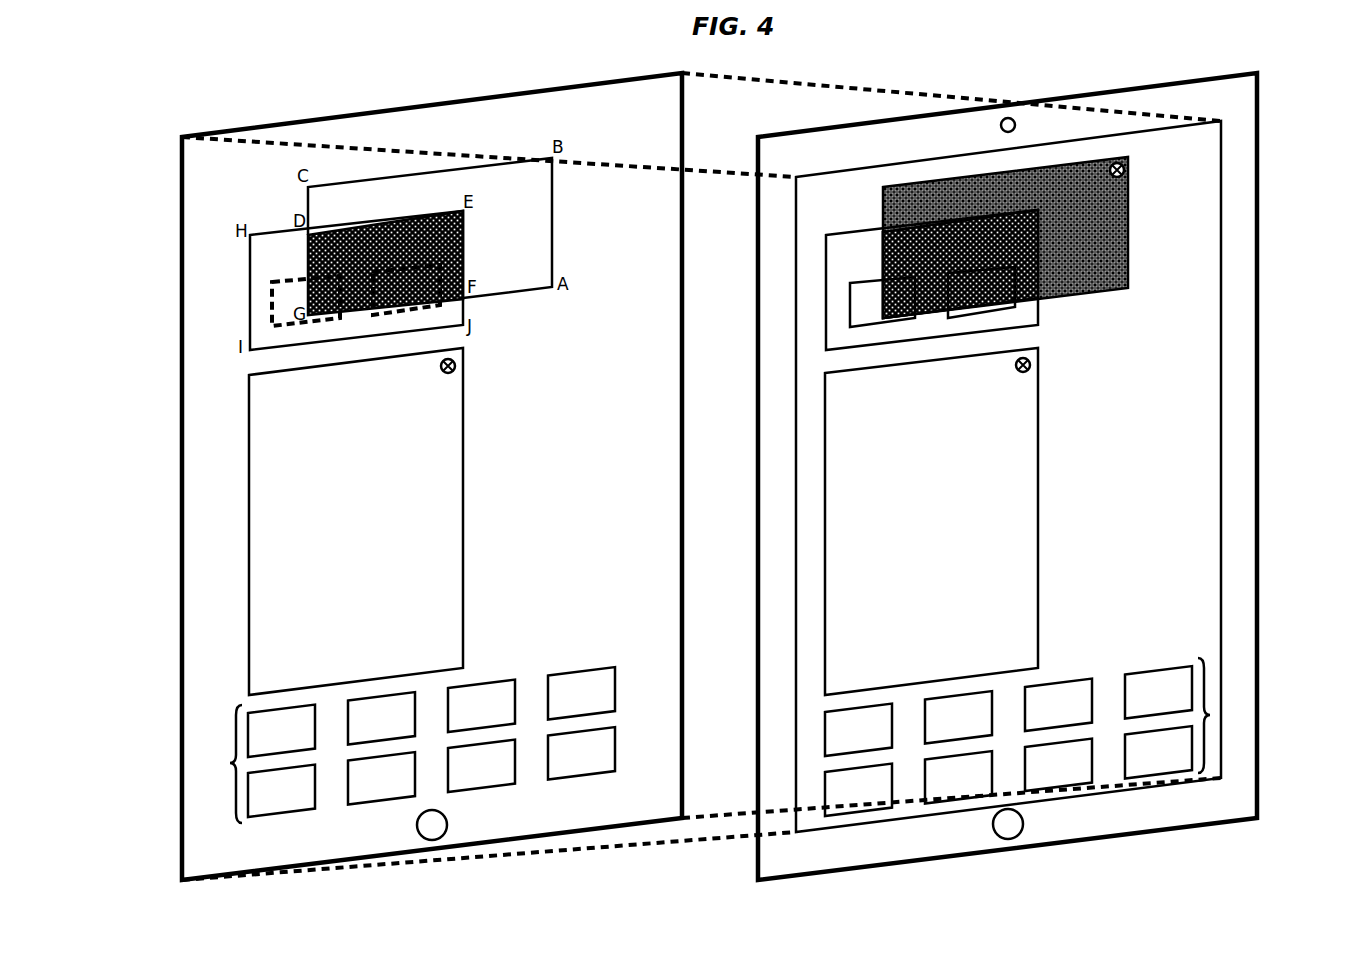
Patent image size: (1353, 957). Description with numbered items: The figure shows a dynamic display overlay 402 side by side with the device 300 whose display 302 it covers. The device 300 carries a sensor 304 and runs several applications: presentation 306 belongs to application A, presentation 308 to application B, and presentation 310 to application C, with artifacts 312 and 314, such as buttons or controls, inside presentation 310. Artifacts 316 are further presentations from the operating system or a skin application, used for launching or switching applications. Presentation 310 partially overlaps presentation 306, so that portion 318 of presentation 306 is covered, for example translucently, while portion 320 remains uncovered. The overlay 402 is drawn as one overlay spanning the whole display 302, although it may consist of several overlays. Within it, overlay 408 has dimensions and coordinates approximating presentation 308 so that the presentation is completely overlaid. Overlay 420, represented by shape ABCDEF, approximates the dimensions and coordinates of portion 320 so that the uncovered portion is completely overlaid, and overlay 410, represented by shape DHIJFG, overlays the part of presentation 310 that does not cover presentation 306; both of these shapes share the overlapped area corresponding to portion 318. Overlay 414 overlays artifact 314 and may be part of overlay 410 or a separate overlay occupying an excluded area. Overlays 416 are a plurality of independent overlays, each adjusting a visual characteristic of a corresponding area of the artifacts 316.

The device 300 is at (1260, 77).
The display 302 is at (1221, 170).
The sensor 304 is at (1012, 118).
The presentation 306 is at (1130, 232).
The presentation 308 is at (1038, 490).
The presentation 310 is at (868, 261).
The artifact 312 is at (1040, 300).
The artifact 314 is at (848, 300).
The artifacts 316 is at (1208, 715).
The portion 318 is at (437, 243).
The portion 320 is at (1093, 228).
The overlay 402 is at (346, 113).
The overlay 408 is at (463, 490).
The overlay 410 is at (291, 265).
The overlay 414 is at (272, 297).
The overlays 416 is at (230, 763).
The overlay 420 is at (516, 231).